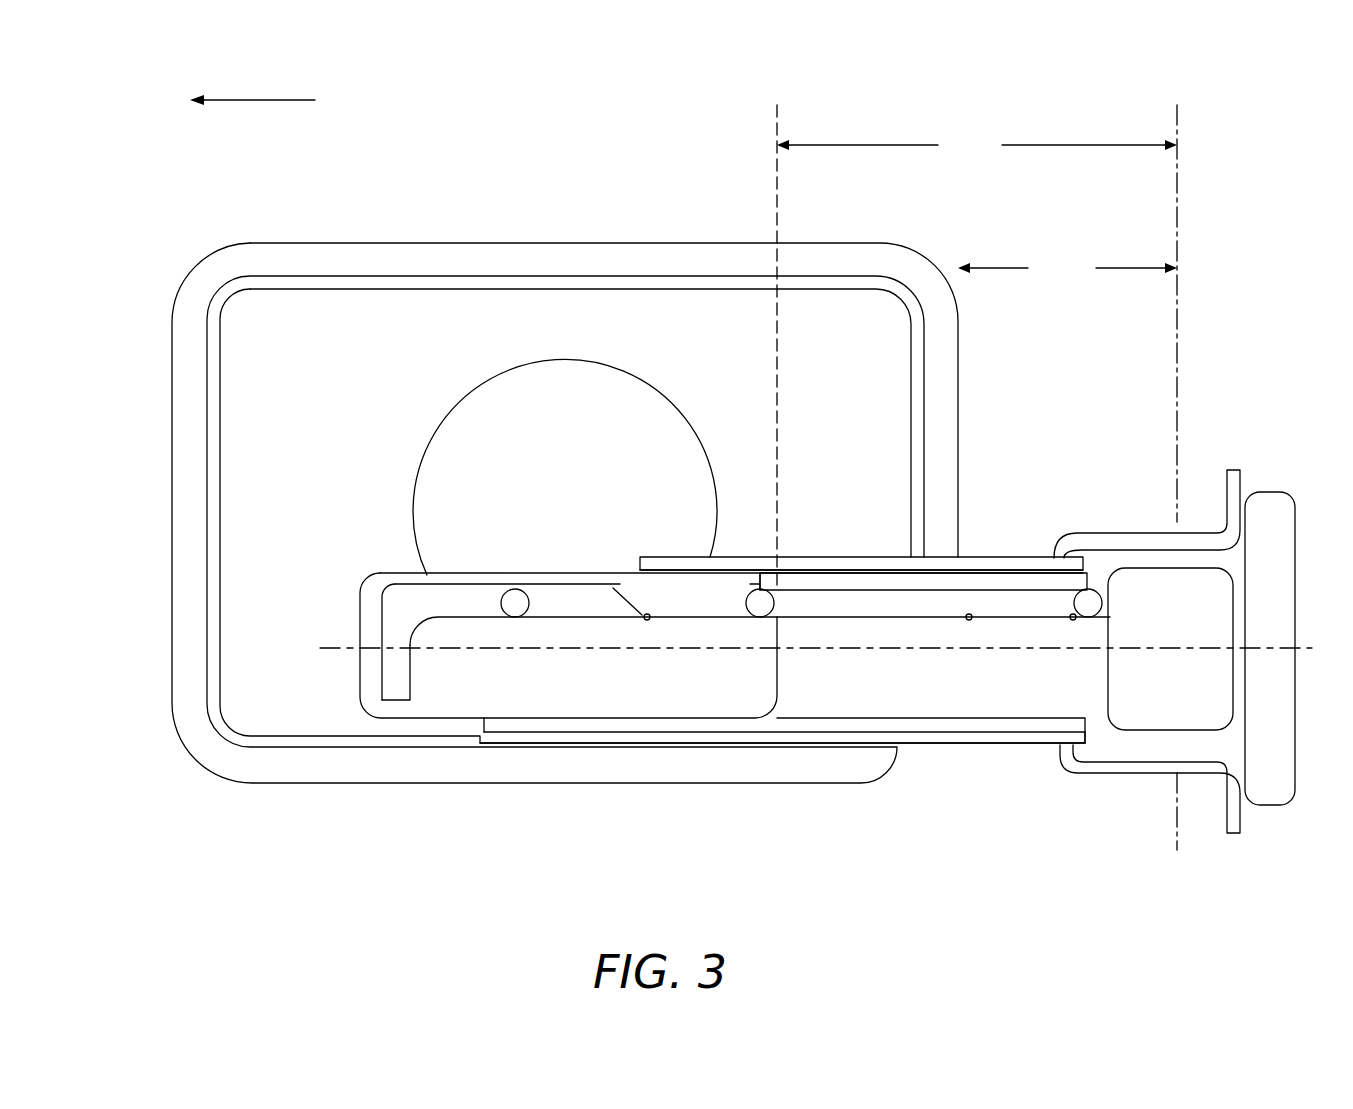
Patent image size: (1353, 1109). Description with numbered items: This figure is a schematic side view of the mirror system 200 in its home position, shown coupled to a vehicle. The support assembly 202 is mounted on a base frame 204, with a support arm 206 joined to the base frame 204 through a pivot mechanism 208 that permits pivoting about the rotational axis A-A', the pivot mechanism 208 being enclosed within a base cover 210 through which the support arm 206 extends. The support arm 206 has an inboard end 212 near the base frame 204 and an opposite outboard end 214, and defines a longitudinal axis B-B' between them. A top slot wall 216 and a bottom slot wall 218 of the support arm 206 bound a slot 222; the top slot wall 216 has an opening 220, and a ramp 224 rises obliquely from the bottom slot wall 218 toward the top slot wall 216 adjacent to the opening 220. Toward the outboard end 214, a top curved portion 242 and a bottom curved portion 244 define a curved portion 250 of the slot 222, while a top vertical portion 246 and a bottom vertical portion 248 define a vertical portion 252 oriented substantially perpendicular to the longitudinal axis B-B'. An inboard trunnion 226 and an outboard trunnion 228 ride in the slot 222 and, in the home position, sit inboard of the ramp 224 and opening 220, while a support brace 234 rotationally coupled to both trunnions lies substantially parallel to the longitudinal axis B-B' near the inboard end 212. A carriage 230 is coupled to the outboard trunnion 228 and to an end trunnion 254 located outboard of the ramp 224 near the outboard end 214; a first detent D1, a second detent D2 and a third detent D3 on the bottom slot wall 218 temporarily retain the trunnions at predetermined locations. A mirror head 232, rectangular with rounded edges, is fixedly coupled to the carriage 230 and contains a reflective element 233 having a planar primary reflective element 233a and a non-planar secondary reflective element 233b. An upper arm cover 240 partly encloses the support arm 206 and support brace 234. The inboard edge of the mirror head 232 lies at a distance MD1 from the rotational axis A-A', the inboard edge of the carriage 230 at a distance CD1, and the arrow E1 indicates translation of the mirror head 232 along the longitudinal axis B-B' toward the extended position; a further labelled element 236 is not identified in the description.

The mirror system 200 is at (963, 100).
The support assembly 202 is at (946, 832).
The base frame 204 is at (1274, 505).
The support arm 206 is at (1003, 720).
The pivot mechanism 208 is at (1160, 707).
The base cover 210 is at (1207, 770).
The inboard end 212 is at (1095, 735).
The outboard end 214 is at (336, 704).
The top slot wall 216 is at (603, 578).
The bottom slot wall 218 is at (702, 618).
The opening 220 is at (630, 568).
The slot 222 is at (830, 600).
The ramp 224 is at (620, 590).
The inboard trunnion 226 is at (1090, 597).
The outboard trunnion 228 is at (757, 612).
The carriage 230 is at (777, 680).
The mirror head 232 is at (908, 270).
The reflective element 233 is at (418, 372).
The primary reflective element 233a is at (702, 335).
The secondary reflective element 233b is at (537, 388).
The support brace 234 is at (1040, 527).
The lower plate 236 is at (631, 758).
The upper arm cover 240 is at (885, 565).
The top curved portion 242 is at (376, 582).
The bottom curved portion 244 is at (413, 620).
The top vertical portion 246 is at (360, 615).
The bottom vertical portion 248 is at (412, 690).
The curved portion 250 is at (420, 600).
The vertical portion 252 is at (390, 683).
The end trunnion 254 is at (515, 612).
The arrow E1 is at (252, 86).
The distance CD1 is at (977, 477).
The distance MD1 is at (1067, 268).
The rotational axis A is at (1158, 648).
The longitudinal axis B is at (825, 634).
The first detent D1 is at (1074, 622).
The second detent D2 is at (969, 620).
The third detent D3 is at (648, 620).